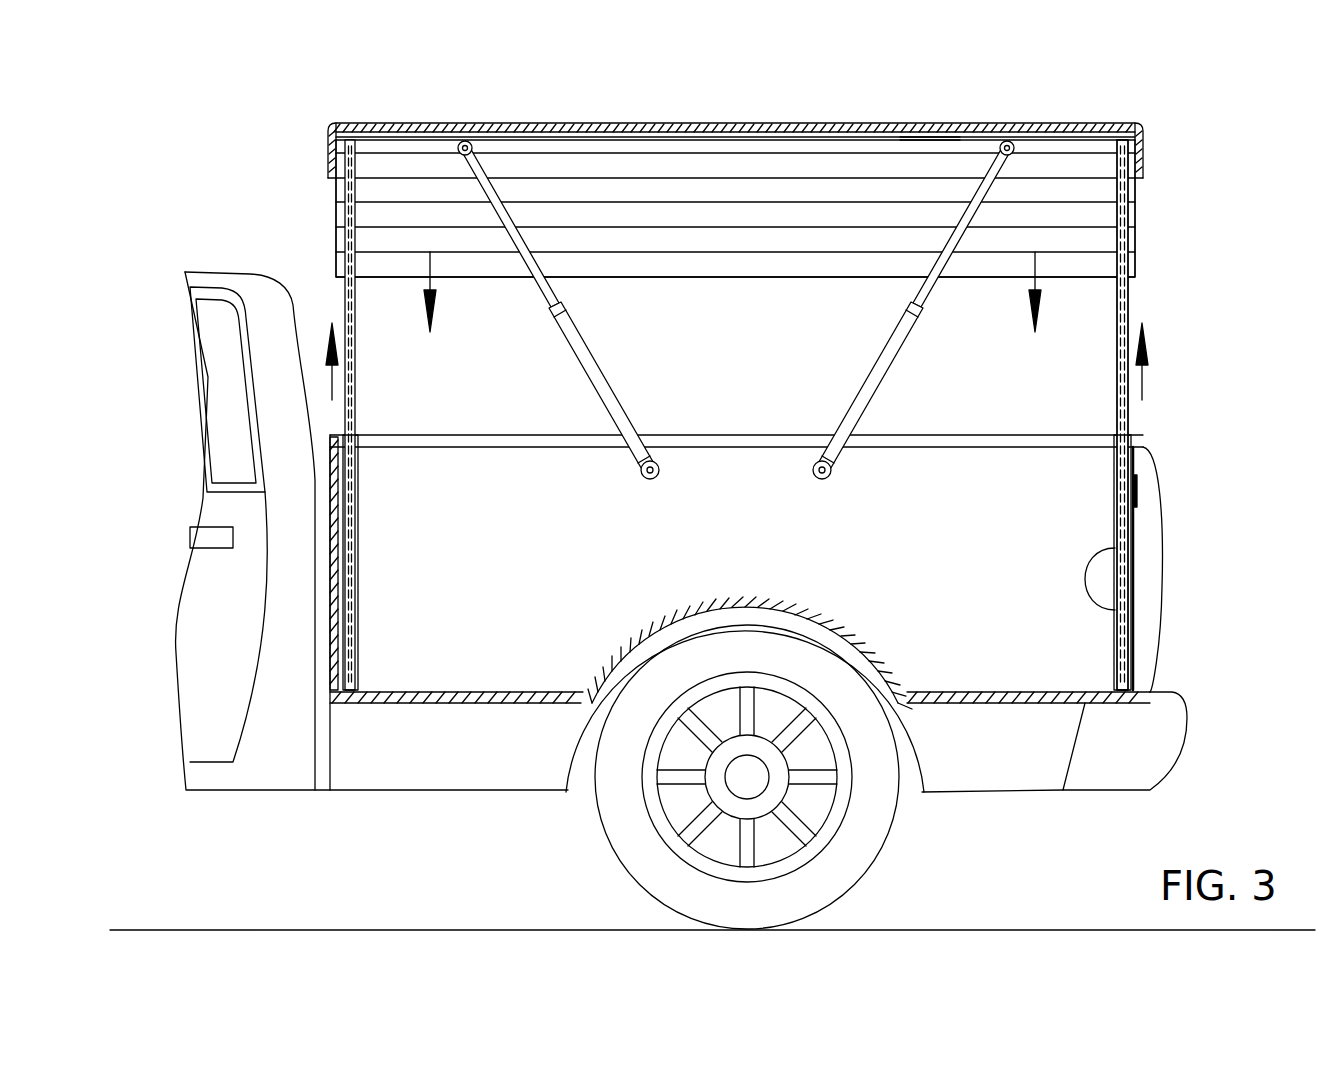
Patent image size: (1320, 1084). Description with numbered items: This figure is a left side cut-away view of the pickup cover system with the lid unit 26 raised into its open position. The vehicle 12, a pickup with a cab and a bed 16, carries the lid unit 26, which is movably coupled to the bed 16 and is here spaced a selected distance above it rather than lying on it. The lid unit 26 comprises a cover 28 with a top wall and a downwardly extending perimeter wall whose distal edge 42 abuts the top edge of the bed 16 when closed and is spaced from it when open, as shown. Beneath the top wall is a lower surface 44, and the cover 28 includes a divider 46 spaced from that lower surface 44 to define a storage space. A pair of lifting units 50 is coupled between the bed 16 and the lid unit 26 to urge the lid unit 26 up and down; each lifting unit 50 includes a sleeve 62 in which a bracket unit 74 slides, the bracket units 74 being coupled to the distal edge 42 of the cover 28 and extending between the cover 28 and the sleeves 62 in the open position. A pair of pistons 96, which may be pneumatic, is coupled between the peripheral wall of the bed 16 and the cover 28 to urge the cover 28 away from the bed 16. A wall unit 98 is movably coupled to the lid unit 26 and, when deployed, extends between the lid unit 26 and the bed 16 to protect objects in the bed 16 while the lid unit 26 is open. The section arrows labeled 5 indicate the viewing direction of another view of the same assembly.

The vehicle 12 is at (240, 790).
The bed 16 is at (1010, 760).
The lid unit 26 is at (1240, 186).
The cover 28 is at (337, 133).
The distal edge 42 is at (1138, 187).
The lower surface 44 is at (398, 130).
The divider 46 is at (930, 137).
The lifting units 50 is at (1160, 287).
The sleeves 62 is at (358, 635).
The bracket units 74 is at (325, 285).
The pistons 96 is at (515, 240).
The wall unit 98 is at (787, 155).
The section line for FIG. 5 is at (1137, 112).